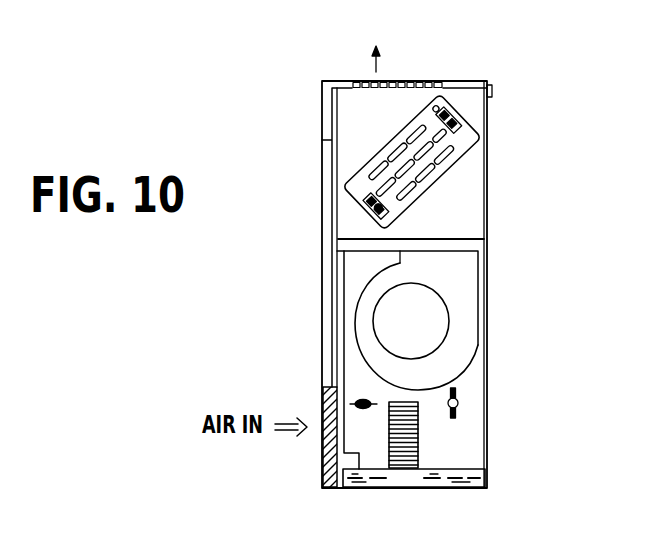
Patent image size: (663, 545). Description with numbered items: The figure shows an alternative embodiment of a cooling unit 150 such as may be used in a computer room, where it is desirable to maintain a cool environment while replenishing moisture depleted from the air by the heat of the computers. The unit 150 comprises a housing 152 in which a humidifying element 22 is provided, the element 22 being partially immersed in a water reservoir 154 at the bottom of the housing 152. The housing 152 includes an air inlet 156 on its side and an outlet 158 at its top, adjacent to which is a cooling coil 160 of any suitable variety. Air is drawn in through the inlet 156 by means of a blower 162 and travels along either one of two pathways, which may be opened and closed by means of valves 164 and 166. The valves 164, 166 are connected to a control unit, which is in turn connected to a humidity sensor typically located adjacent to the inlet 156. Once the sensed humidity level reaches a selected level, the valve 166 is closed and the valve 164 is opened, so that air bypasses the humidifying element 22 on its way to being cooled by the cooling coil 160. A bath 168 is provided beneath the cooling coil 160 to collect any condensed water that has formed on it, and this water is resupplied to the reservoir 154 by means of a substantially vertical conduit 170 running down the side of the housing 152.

The cooling unit 150 is at (503, 123).
The housing 152 is at (322, 120).
The water reservoir 154 is at (470, 478).
The air inlet 156 is at (327, 457).
The outlet 158 is at (405, 80).
The cooling coil 160 is at (404, 170).
The blower 162 is at (427, 317).
The valve 164 is at (357, 401).
The valve 166 is at (458, 401).
The bath 168 is at (473, 239).
The vertical conduit 170 is at (341, 315).
The humidifying element 22 is at (405, 460).